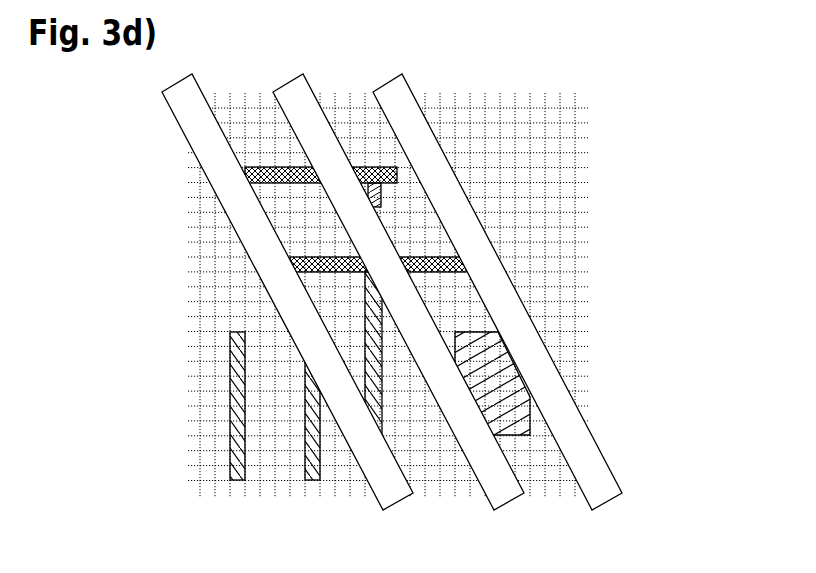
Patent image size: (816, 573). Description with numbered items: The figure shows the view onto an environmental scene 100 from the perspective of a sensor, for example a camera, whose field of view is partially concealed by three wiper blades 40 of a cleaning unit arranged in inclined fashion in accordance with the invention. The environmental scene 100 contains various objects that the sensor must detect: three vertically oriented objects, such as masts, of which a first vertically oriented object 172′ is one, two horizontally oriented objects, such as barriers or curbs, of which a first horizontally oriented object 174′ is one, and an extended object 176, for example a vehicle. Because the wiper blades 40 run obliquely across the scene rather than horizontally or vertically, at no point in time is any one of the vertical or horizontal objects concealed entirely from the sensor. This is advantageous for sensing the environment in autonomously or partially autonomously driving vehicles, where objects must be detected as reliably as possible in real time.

The environmental scene 100 is at (647, 85).
The wiper blades 40 is at (593, 472).
The vertically oriented object 172′ is at (232, 386).
The horizontally oriented object 174′ is at (247, 167).
The extended object 176 is at (505, 380).